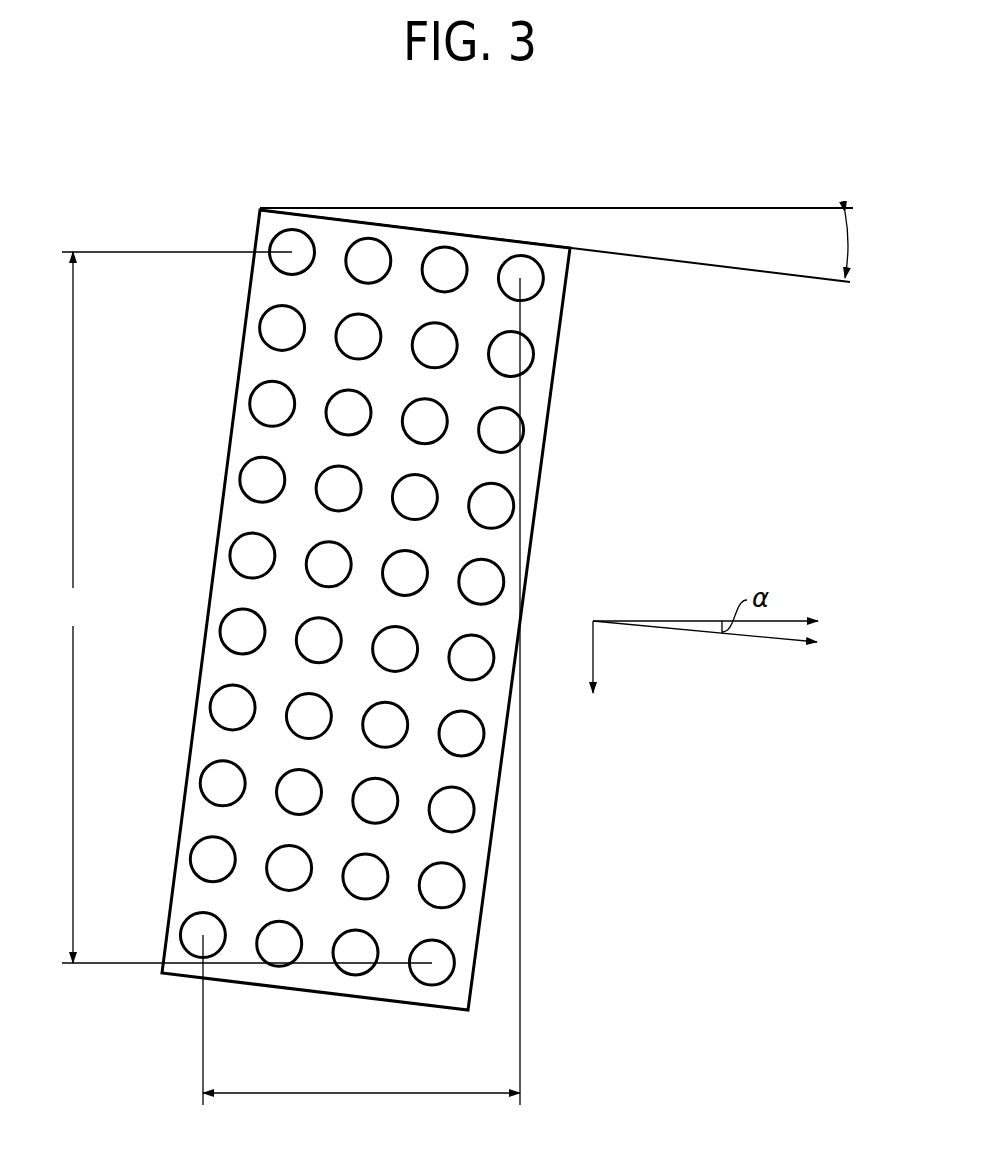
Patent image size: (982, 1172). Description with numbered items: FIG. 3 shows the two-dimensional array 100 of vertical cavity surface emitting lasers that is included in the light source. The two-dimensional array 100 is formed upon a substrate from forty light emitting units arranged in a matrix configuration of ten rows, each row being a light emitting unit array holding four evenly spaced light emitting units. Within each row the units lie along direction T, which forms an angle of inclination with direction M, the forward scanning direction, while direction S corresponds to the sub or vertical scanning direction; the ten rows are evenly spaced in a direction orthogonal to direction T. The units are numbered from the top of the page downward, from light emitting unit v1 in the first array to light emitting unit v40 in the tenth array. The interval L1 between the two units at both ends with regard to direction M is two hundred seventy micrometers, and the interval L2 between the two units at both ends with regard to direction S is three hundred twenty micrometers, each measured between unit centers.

The two-dimensional array 100 is at (443, 169).
The light emitting unit v1 is at (268, 243).
The light emitting unit v40 is at (413, 976).
The interval L1 is at (361, 691).
The interval L2 is at (245, 607).
The direction M is at (718, 622).
The direction T is at (715, 640).
The direction S is at (592, 673).